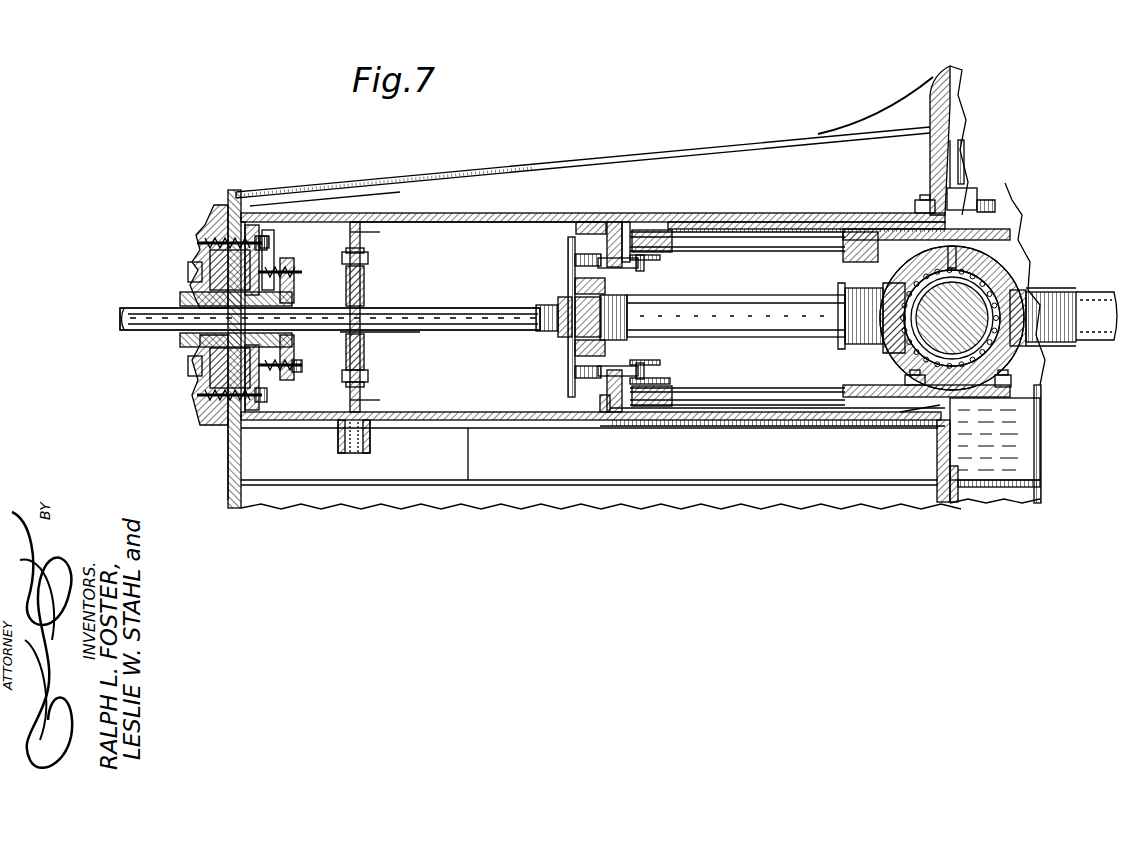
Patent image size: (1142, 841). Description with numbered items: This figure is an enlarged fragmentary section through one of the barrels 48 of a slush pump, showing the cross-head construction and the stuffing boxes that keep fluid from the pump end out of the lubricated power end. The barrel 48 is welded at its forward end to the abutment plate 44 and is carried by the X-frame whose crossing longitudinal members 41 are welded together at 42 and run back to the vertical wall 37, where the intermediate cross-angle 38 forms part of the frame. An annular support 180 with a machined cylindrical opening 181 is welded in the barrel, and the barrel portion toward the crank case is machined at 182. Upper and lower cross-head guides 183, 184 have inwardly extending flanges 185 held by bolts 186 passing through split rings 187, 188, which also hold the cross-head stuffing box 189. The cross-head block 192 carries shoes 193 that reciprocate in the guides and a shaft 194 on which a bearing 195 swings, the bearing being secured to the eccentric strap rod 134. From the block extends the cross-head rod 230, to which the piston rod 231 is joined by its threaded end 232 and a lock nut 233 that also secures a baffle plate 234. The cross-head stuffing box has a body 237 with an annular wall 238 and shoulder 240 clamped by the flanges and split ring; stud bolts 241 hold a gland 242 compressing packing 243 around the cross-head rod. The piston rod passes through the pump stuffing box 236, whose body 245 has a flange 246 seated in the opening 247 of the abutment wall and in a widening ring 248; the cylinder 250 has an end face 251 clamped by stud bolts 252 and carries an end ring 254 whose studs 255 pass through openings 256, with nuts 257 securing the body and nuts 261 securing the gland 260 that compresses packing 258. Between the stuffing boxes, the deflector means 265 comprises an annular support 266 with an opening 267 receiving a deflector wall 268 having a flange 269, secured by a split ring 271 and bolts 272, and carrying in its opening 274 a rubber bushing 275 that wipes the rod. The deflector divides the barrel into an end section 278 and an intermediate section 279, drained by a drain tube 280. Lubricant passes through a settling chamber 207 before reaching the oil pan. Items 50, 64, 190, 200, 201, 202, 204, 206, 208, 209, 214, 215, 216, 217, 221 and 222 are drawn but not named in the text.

The vertical wall 37 is at (930, 152).
The intermediate cross-angle 38 is at (952, 503).
The longitudinal members 41 is at (434, 462).
The weld 42 is at (470, 458).
The abutment plate 44 is at (234, 192).
The barrel 48 is at (492, 213).
The top plate 50 is at (675, 157).
The curved cover 64 is at (932, 97).
The eccentric strap rod 134 is at (1078, 290).
The annular support 180 is at (614, 213).
The cylindrical opening 181 is at (625, 213).
The machined portion 182 is at (708, 213).
The upper cross-head guide 183 is at (748, 213).
The lower cross-head guide 184 is at (735, 422).
The inwardly extending flanges 185 is at (670, 250).
The bolts 186 is at (640, 262).
The split ring 187 is at (672, 380).
The split ring 188 is at (600, 388).
The cross-head stuffing box 189 is at (591, 232).
The flange plate 190 is at (1000, 215).
The cross-head block 192 is at (880, 360).
The shoes 193 is at (915, 213).
The shaft 194 is at (1010, 345).
The bearing 195 is at (1040, 290).
The block 200 is at (975, 198).
The bolt head 201 is at (995, 205).
The liner 202 is at (810, 213).
The end block 204 is at (848, 240).
The collar 206 is at (985, 262).
The settling chamber 207 is at (1010, 462).
The reservoir wall 208 is at (1041, 440).
The reservoir bottom 209 is at (1015, 488).
The plate 214 is at (826, 425).
The plate 215 is at (880, 418).
The seal 216 is at (960, 420).
The nut 217 is at (1025, 378).
The strip 221 is at (962, 165).
The strip 222 is at (955, 186).
The cross-head rod 230 is at (755, 310).
The piston rod 231 is at (470, 312).
The threaded end 232 is at (548, 330).
The lock nut 233 is at (562, 300).
The baffle plate 234 is at (568, 392).
The pump stuffing box 236 is at (156, 341).
The stuffing box body 237 is at (660, 262).
The annular wall 238 is at (648, 362).
The annular shoulder 240 is at (572, 385).
The stud bolts 241 is at (575, 282).
The gland 242 is at (575, 345).
The packing 243 is at (632, 292).
The body 245 is at (188, 268).
The flange 246 is at (250, 270).
The cylindrical opening 247 is at (197, 243).
The widening ring 248 is at (252, 222).
The cylinder 250 is at (197, 398).
The end face 251 is at (228, 436).
The stud bolts 252 is at (205, 230).
The end ring 254 is at (190, 372).
The studs 255 is at (305, 275).
The openings 256 is at (190, 347).
The nuts 257 is at (280, 372).
The packing 258 is at (180, 297).
The gland 260 is at (295, 298).
The nuts 261 is at (300, 342).
The deflector means 265 is at (375, 284).
The annular support 266 is at (362, 240).
The annular opening 267 is at (290, 260).
The deflector wall 268 is at (364, 296).
The flange 269 is at (360, 390).
The split ring 271 is at (330, 264).
The bolts 272 is at (368, 258).
The opening 274 is at (364, 340).
The rubber bushing 275 is at (365, 334).
The end section 278 is at (312, 222).
The intermediate section 279 is at (445, 238).
The drain tube 280 is at (340, 438).